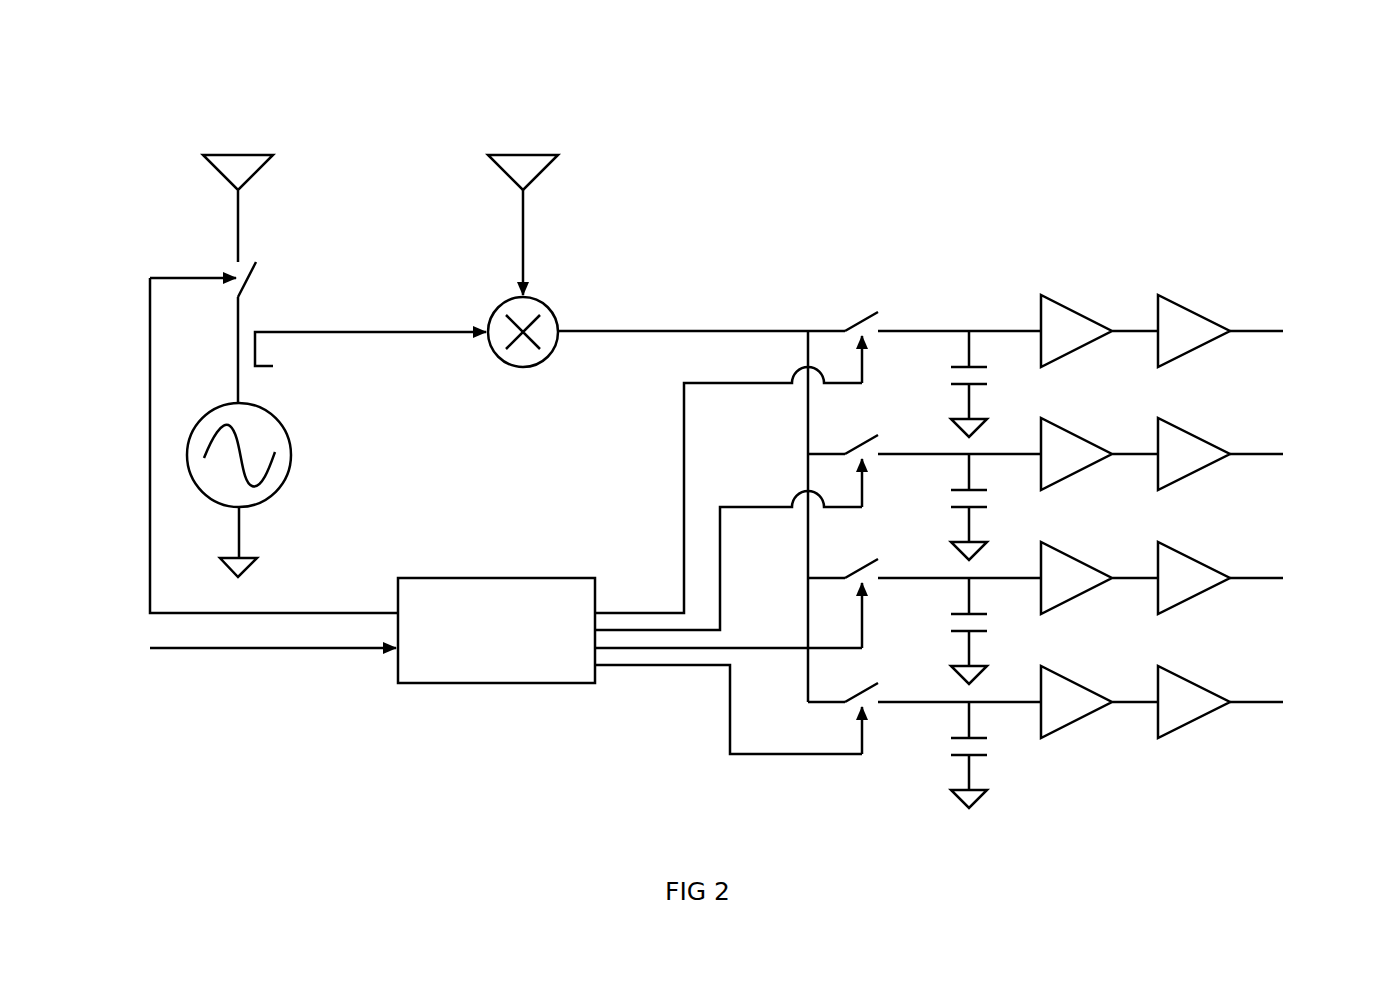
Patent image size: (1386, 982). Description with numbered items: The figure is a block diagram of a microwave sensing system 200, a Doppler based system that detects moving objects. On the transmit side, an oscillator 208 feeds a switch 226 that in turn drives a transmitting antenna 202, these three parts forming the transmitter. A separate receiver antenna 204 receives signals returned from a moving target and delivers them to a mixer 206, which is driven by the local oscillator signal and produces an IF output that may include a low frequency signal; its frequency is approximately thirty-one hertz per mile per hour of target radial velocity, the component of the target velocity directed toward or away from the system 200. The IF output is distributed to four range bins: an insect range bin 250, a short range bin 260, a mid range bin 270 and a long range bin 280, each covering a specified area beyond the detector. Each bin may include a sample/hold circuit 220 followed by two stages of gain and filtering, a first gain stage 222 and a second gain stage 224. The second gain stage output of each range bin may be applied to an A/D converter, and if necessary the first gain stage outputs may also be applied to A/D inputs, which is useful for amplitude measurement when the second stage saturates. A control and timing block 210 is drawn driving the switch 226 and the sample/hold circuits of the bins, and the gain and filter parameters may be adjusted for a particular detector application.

The microwave sensing system 200 is at (747, 418).
The transmitting antenna 202 is at (266, 208).
The receiver antenna 204 is at (549, 225).
The mixer 206 is at (551, 337).
The oscillator 208 is at (267, 490).
The control/timing unit 210 is at (496, 648).
The sample/hold circuit 220 is at (860, 307).
The first gain stage 222 is at (1045, 297).
The second gain stage 224 is at (1162, 297).
The switch 226 is at (227, 332).
The insect range bin 250 is at (1288, 290).
The short range bin 260 is at (1288, 413).
The mid range bin 270 is at (1288, 537).
The long range bin 280 is at (1288, 661).